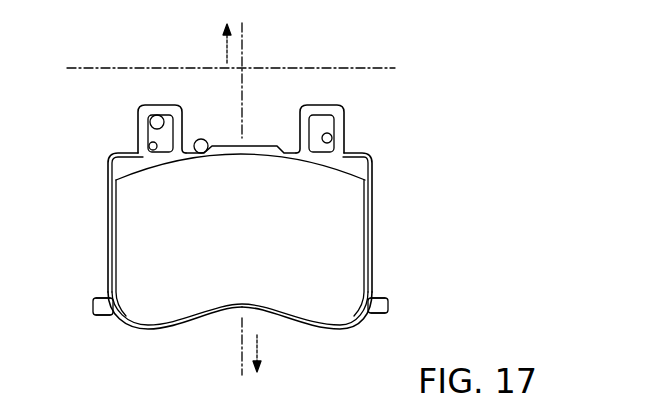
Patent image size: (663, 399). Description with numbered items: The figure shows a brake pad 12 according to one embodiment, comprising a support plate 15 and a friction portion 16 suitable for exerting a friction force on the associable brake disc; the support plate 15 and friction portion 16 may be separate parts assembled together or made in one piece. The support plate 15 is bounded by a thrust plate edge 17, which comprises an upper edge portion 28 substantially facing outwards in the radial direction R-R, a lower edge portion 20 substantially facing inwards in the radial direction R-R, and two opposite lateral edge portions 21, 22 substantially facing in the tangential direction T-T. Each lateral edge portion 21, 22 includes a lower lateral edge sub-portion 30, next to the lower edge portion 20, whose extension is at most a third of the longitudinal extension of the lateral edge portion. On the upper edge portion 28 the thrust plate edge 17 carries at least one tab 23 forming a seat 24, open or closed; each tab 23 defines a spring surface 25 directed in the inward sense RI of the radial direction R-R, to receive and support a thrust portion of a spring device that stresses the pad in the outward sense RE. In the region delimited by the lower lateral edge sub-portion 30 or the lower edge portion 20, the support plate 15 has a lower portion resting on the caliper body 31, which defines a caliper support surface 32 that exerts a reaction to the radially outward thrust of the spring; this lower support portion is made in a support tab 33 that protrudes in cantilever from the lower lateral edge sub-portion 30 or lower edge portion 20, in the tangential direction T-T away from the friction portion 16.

The pad 12 is at (331, 213).
The support plate 15 is at (364, 167).
The friction portion 16 is at (333, 310).
The thrust plate edge 17 is at (262, 147).
The lower edge portion 20 is at (203, 317).
The lateral edge portion 21 is at (375, 258).
The lateral edge portion 22 is at (107, 223).
The tab 23 is at (138, 123).
The seat 24 is at (149, 146).
The spring surface 25 is at (148, 118).
The upper edge portion 28 is at (205, 153).
The lower lateral edge sub-portion 30 is at (107, 277).
The lower portion resting on the caliper body 31 is at (107, 315).
The caliper support surface 32 is at (100, 298).
The support tab 33 is at (106, 313).
The outward sense RE is at (227, 50).
The inward sense RI is at (271, 354).
The radial direction R-R is at (245, 45).
The tangential direction T-T is at (388, 67).